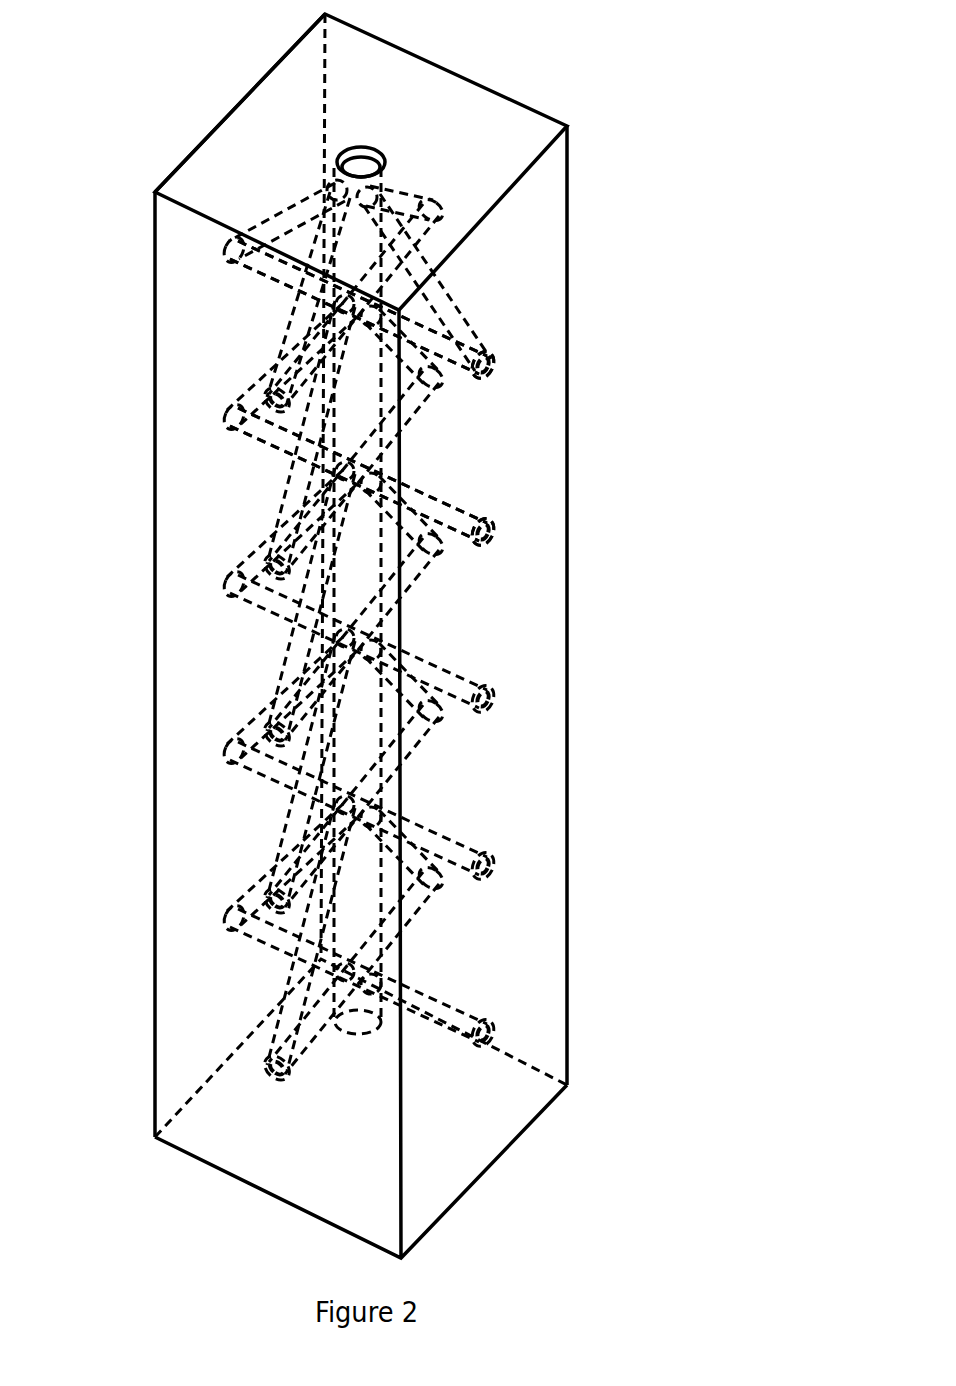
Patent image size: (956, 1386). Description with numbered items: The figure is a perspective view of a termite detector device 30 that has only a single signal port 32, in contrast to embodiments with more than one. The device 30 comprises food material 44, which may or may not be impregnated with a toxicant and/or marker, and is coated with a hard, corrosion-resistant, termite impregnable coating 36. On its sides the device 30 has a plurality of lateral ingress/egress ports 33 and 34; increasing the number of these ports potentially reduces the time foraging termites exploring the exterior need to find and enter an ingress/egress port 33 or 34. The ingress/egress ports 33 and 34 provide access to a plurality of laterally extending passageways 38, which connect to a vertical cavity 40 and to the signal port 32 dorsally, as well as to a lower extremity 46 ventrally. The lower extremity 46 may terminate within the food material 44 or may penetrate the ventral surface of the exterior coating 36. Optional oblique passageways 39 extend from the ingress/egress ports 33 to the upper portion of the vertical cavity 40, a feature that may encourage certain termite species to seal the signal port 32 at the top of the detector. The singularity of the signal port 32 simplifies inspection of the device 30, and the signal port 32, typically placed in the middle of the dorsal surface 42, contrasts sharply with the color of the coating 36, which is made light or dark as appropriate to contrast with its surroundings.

The device 30 is at (737, 72).
The signal port 32 is at (358, 147).
The ingress/egress port 33 is at (500, 378).
The ingress/egress port 34 is at (497, 540).
The coating 36 is at (153, 400).
The laterally extending passageways 38 is at (448, 505).
The oblique passageways 39 is at (467, 314).
The vertical cavity 40 is at (352, 538).
The dorsal surface 42 is at (240, 140).
The food material 44 is at (278, 165).
The lower extremity 46 is at (368, 1025).